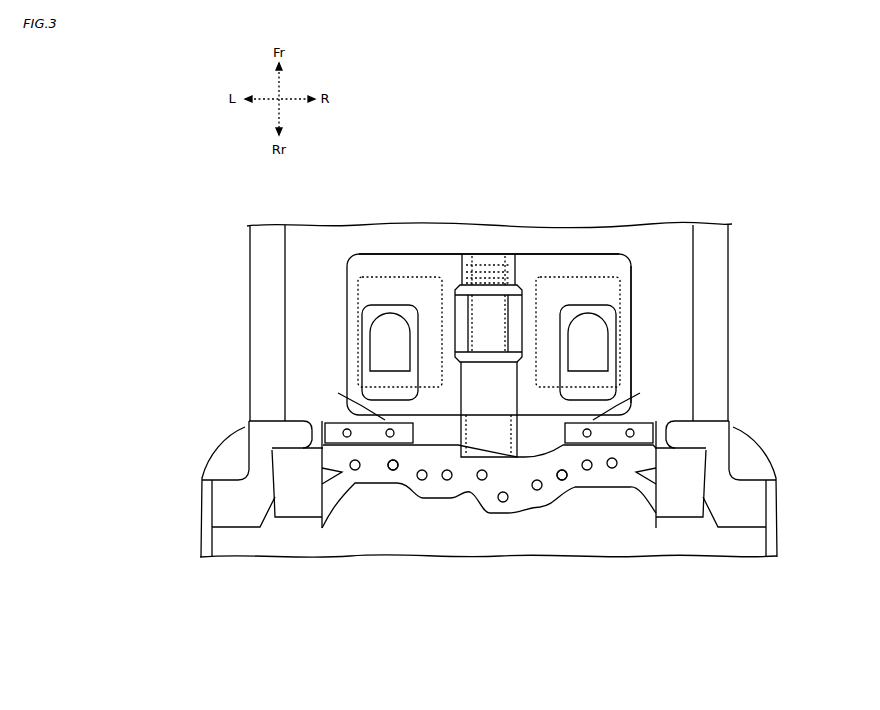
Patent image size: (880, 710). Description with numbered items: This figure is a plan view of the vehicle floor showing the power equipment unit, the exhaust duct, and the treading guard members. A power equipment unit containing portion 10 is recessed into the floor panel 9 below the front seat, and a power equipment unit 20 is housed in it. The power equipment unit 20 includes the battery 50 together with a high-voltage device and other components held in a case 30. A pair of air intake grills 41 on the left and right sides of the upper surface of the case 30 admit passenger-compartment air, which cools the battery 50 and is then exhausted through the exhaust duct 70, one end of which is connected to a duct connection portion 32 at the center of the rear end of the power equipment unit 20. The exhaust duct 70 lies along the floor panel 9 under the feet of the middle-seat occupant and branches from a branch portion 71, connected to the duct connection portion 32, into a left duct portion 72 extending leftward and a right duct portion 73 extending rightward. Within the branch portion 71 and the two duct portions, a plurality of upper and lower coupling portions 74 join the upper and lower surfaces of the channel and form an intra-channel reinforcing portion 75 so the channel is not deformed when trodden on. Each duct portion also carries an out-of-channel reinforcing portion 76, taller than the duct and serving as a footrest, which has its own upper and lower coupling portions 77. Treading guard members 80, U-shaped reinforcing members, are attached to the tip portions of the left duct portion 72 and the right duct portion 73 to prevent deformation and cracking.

The floor panel 9 is at (663, 255).
The power equipment unit containing portion 10 is at (345, 279).
The power equipment unit 20 is at (605, 253).
The case 30 is at (625, 367).
The duct connection portion 32 is at (489, 402).
The air intake grill 41 is at (385, 337).
The battery 50 is at (404, 277).
The exhaust duct 70 is at (452, 503).
The branch portion 71 is at (488, 480).
The left duct portion 72 is at (367, 480).
The right duct portion 73 is at (604, 475).
The upper and lower coupling portion 74 is at (398, 472).
The intra-channel reinforcing portion 75 is at (477, 470).
The out-of-channel reinforcing portion 76 is at (322, 423).
The upper and lower coupling portion 77 is at (350, 428).
The treading guard member 80 is at (285, 465).